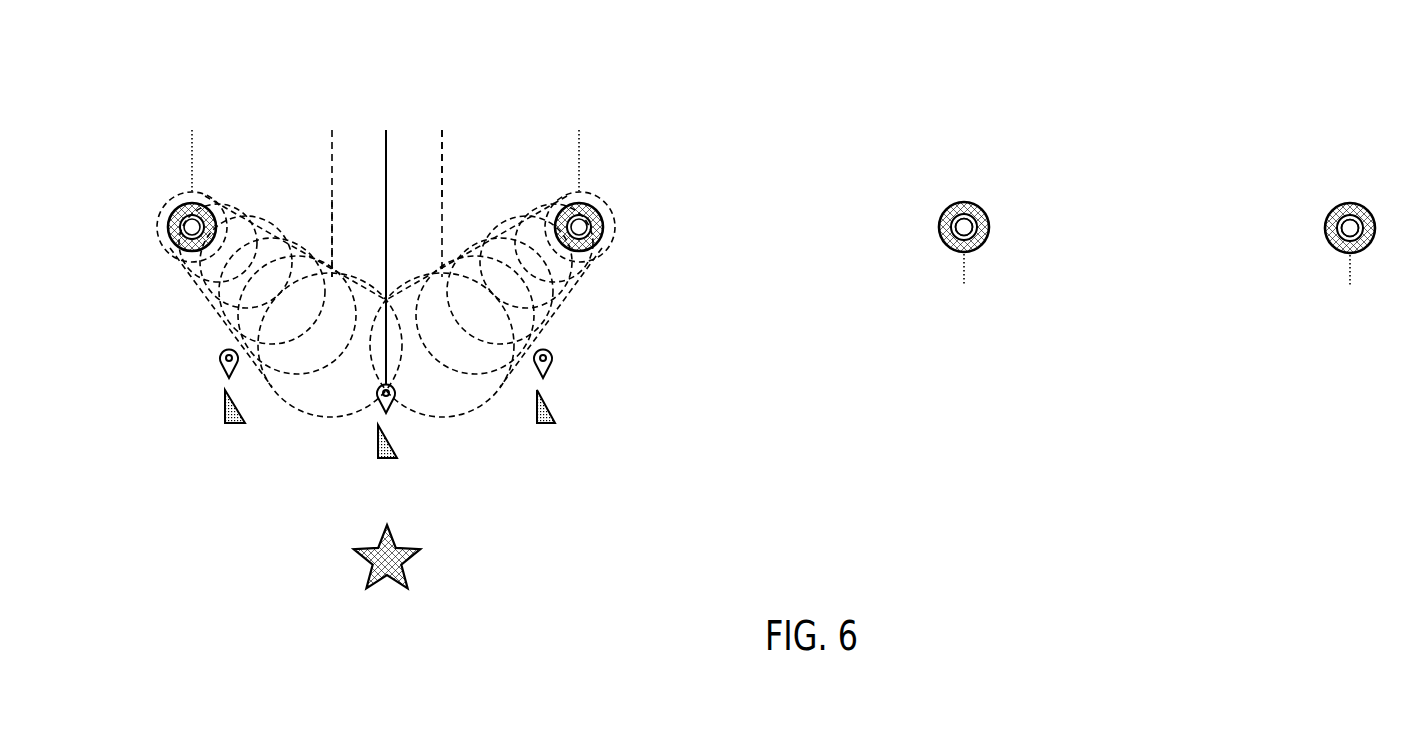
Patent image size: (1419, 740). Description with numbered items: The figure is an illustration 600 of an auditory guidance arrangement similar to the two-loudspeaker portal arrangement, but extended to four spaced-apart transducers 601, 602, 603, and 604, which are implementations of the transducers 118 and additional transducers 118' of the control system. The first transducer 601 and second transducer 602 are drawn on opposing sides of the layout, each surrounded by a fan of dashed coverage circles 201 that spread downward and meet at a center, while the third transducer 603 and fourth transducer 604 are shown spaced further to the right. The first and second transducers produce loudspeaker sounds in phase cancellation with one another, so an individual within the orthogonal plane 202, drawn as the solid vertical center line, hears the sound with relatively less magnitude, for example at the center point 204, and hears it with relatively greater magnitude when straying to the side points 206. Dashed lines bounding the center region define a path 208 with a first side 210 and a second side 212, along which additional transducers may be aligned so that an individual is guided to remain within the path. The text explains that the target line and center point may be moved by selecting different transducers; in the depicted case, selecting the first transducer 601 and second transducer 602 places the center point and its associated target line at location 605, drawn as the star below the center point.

The illustration 600 is at (1318, 101).
The first transducer 601 is at (191, 224).
The second transducer 602 is at (581, 226).
The third transducer 603 is at (962, 226).
The fourth transducer 604 is at (1350, 227).
The location 605 is at (421, 552).
The transducers 118 is at (395, 215).
The additional transducers 118' is at (1157, 237).
The coverage cell 201 is at (305, 414).
The orthogonal plane 202 is at (387, 189).
The point 204 is at (383, 465).
The points 206 is at (228, 430).
The path 208 is at (332, 188).
The first side 210 is at (330, 226).
The second side 212 is at (443, 152).